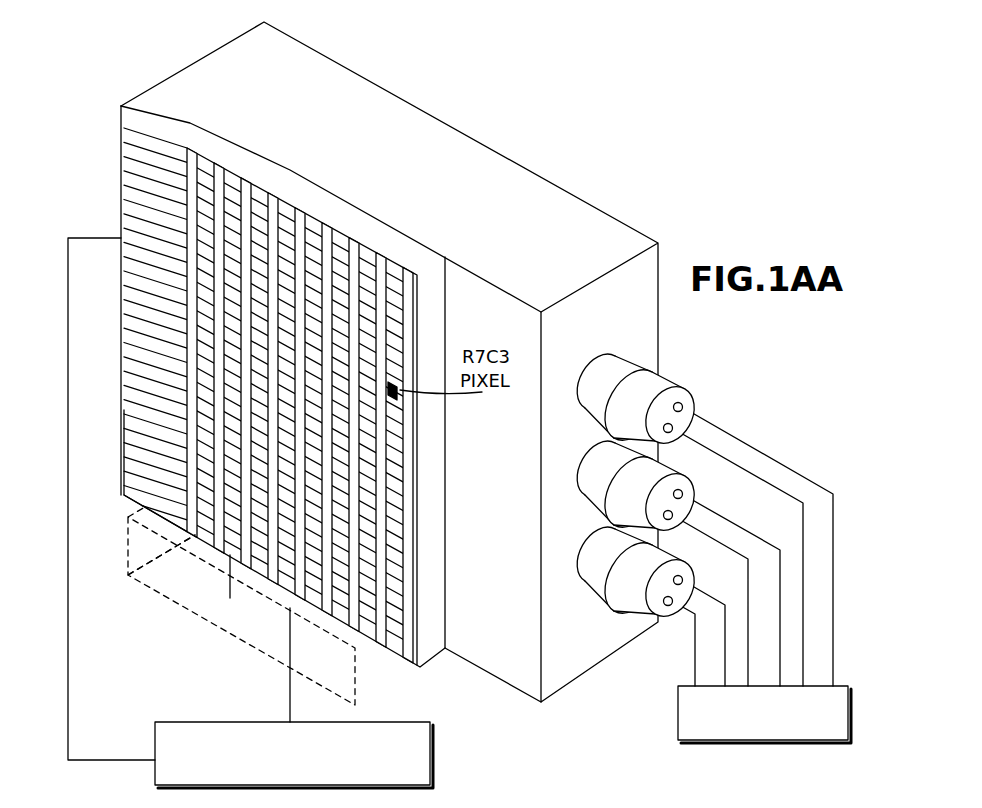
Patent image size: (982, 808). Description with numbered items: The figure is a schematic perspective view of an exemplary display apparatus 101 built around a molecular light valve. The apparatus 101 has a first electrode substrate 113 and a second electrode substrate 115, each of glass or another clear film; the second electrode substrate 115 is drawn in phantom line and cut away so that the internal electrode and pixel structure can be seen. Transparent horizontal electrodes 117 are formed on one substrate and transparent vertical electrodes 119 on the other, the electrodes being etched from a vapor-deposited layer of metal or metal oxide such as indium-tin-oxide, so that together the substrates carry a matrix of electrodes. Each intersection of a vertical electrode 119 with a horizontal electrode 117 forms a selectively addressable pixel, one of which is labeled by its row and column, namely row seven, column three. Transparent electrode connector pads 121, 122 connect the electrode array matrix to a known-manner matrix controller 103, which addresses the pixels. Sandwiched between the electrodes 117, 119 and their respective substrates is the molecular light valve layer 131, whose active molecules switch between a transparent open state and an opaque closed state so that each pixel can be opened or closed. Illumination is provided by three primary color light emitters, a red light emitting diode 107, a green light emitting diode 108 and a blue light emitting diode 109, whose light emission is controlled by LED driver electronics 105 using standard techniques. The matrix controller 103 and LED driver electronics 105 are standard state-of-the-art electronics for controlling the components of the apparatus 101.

The apparatus 101 is at (514, 126).
The matrix controller 103 is at (243, 723).
The LED driver electronics 105 is at (678, 712).
The red light emitting diode 107 is at (676, 388).
The green light emitting diode 108 is at (694, 490).
The blue light emitting diode 109 is at (628, 600).
The first electrode substrate 113 is at (143, 105).
The second electrode substrate 115 is at (178, 602).
The horizontal electrodes 117 is at (137, 180).
The vertical electrodes 119 is at (240, 556).
The electrode connector pads 121 is at (160, 427).
The electrode connector pads 122 is at (208, 535).
The molecular light valve layer 131 is at (285, 190).